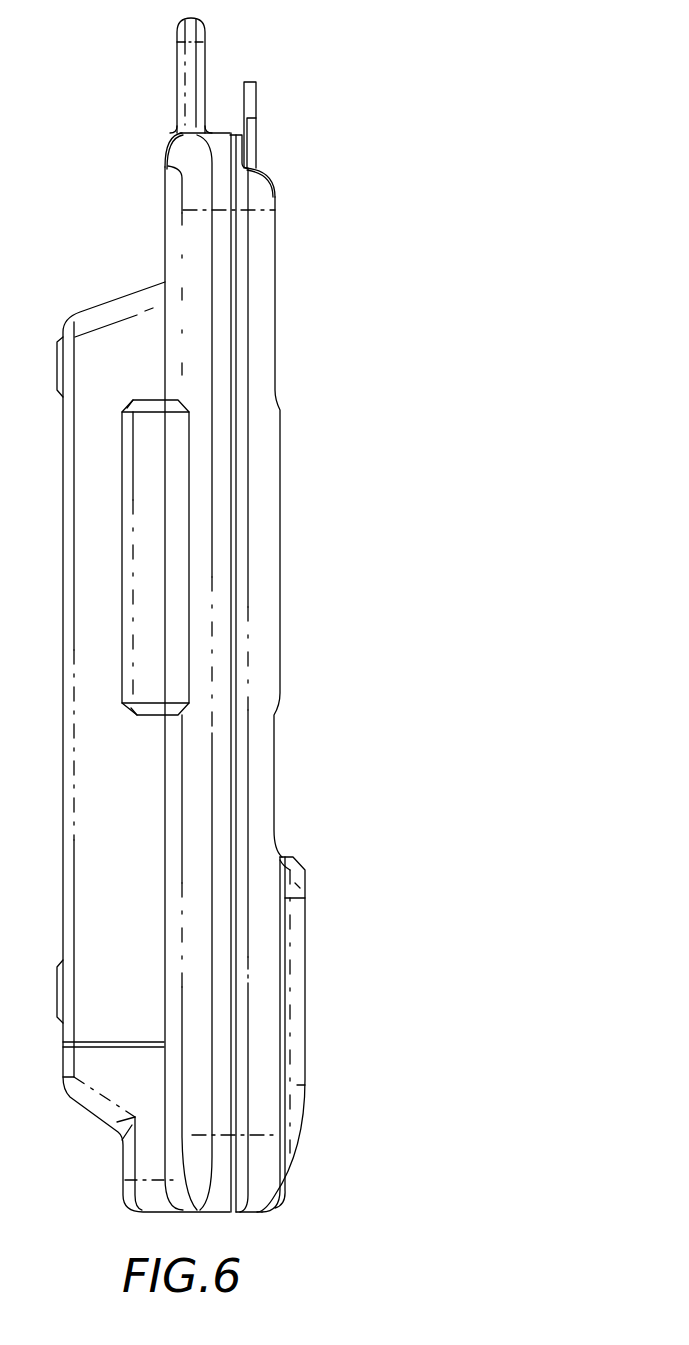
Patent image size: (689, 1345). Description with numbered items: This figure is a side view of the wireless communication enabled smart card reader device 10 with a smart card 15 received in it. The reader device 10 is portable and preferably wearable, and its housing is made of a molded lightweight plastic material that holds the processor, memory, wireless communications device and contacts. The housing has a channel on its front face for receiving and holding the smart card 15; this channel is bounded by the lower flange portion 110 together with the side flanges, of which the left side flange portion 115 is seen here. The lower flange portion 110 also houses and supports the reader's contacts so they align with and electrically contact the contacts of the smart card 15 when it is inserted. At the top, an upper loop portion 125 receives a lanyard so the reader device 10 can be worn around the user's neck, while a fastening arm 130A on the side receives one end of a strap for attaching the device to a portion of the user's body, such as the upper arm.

The smart card reader device 10 is at (148, 257).
The smart card 15 is at (252, 110).
The lower flange portion 110 is at (297, 1000).
The left side flange portion 115 is at (270, 528).
The upper loop portion 125 is at (207, 63).
The fastening arm 130A is at (148, 658).